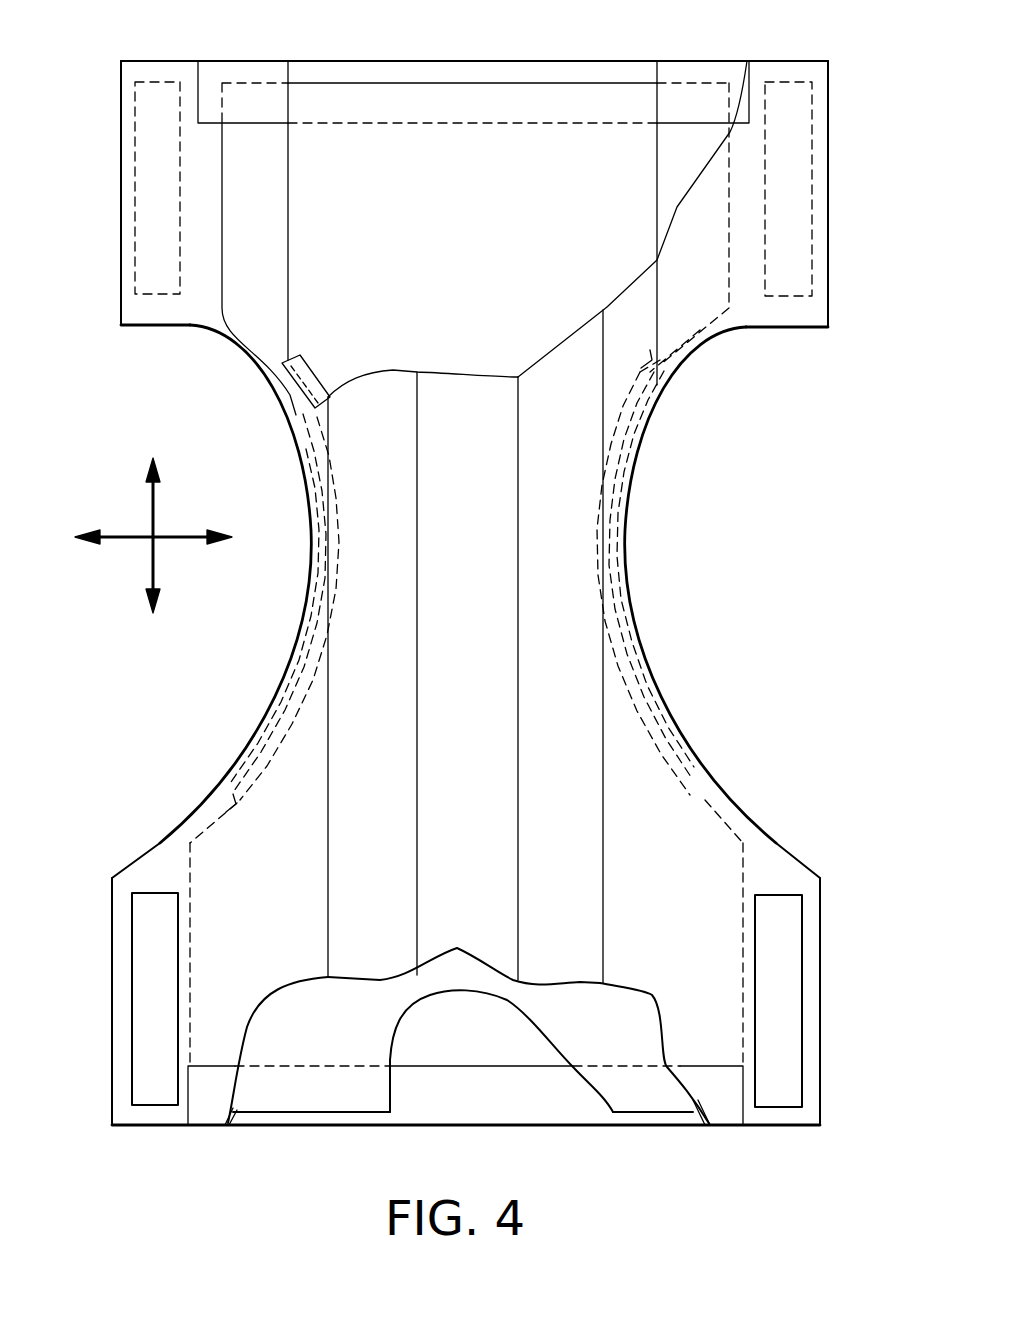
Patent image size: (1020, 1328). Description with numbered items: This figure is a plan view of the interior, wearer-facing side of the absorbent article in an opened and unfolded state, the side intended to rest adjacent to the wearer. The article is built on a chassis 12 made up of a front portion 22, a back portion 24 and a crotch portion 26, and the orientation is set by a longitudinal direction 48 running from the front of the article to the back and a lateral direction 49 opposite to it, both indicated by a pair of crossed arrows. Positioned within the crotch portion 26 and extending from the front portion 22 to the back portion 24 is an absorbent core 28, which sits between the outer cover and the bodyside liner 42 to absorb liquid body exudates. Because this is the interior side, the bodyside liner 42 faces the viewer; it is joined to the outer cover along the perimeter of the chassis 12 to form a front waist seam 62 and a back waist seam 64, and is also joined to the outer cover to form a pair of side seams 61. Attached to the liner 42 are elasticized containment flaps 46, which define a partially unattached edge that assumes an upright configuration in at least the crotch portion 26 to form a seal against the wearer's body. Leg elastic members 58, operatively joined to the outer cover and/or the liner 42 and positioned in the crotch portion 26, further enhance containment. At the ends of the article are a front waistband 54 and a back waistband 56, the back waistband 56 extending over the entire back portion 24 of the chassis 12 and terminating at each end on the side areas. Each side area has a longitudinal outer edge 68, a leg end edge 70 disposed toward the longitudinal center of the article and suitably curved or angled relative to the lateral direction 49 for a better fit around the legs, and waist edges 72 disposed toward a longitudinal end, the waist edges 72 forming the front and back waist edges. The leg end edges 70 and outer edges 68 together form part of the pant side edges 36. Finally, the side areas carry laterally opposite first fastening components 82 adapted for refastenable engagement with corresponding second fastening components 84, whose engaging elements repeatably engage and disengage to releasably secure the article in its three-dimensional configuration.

The chassis 12 is at (560, 468).
The front portion 22 is at (456, 267).
The back portion 24 is at (448, 925).
The crotch portion 26 is at (453, 569).
The absorbent core 28 is at (385, 1040).
The pant side edges 36 is at (300, 617).
The bodyside liner 42 is at (631, 949).
The elasticized containment flaps 46 is at (340, 865).
The longitudinal direction 48 is at (153, 503).
The lateral direction 49 is at (132, 535).
The front waistband 54 is at (362, 83).
The back waistband 56 is at (413, 1110).
The leg elastic members 58 is at (655, 657).
The side seams 61 is at (318, 468).
The front waist seam 62 is at (475, 61).
The back waist seam 64 is at (553, 1110).
The longitudinal outer edge 68 is at (121, 143).
The leg end edge 70 is at (218, 337).
The waist edges 72 is at (163, 61).
The first fastening components 82 is at (140, 993).
The second fastening components 84 is at (135, 212).